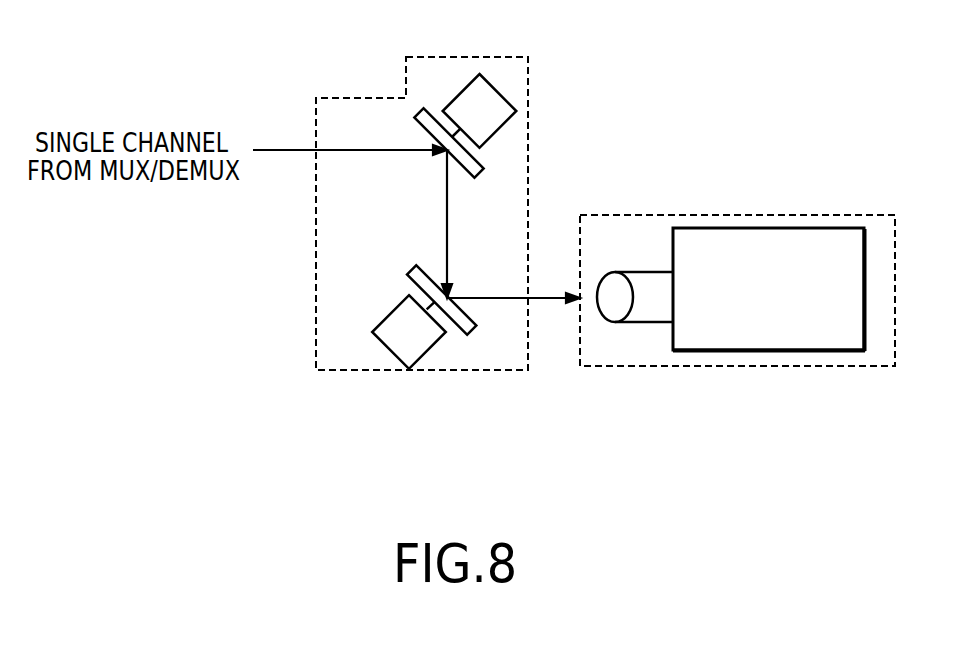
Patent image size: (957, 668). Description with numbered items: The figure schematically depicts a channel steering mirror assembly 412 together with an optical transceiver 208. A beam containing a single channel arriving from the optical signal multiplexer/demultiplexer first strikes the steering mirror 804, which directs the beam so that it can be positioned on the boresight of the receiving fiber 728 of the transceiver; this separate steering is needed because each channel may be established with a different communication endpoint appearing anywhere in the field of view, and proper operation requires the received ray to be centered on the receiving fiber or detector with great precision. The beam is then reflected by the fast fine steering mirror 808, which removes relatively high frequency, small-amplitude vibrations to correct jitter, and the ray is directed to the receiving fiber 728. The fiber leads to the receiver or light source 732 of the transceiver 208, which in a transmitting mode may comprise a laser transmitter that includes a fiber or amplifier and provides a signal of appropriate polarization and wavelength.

The steering mirror 804 is at (495, 88).
The fast fine steering mirror 808 is at (373, 327).
The channel steering mirror assembly 412 is at (527, 177).
The receiving fiber 728 is at (634, 272).
The receiver or light source 732 is at (762, 228).
The transceiver 208 is at (833, 215).